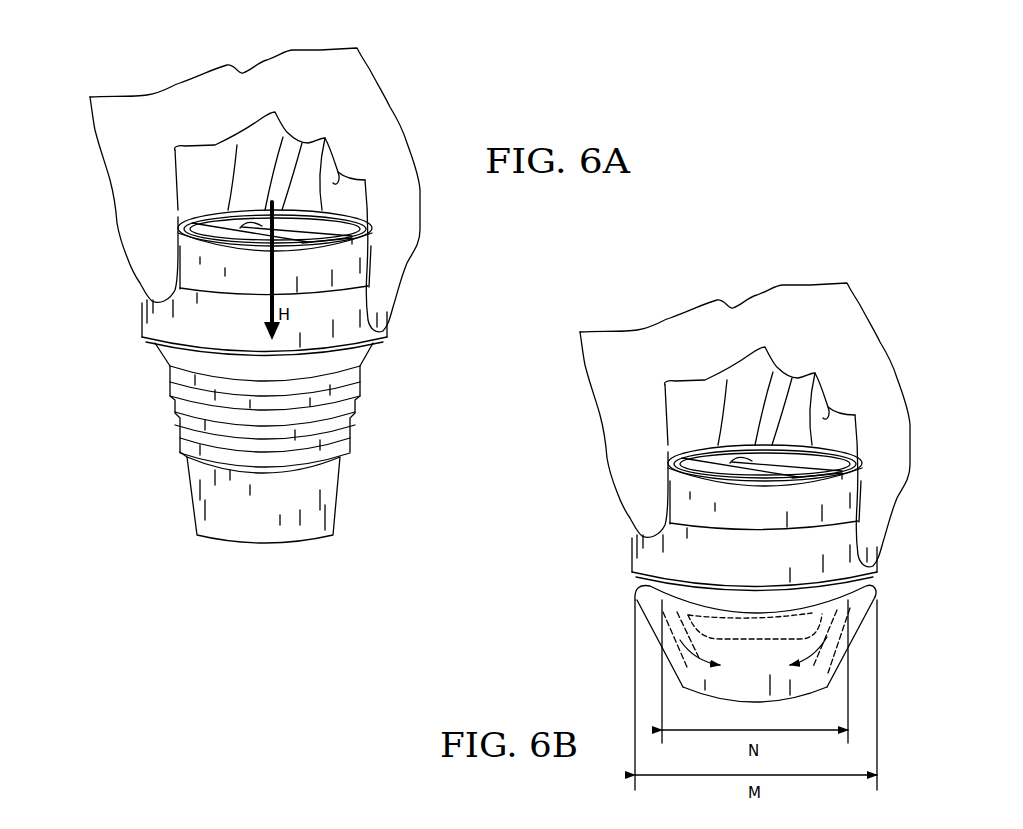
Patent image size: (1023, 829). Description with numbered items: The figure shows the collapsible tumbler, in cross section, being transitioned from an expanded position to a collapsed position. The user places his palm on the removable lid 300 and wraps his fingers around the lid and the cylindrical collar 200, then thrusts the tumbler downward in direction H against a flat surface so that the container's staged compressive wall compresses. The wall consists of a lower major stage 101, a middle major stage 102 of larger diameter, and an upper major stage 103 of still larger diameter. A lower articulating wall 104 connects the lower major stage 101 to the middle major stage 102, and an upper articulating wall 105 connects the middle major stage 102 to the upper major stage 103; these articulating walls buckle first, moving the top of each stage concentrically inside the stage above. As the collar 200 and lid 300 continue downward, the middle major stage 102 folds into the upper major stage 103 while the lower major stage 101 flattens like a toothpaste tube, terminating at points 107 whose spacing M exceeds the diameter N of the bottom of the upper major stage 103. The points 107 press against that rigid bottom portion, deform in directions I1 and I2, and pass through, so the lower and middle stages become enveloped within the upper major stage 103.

In FIG. 6A, the lower major stage 101 is at (322, 495).
In FIG. 6B, the lower major stage 101 is at (830, 652).
In FIG. 6A, the middle major stage 102 is at (327, 410).
In FIG. 6B, the middle major stage 102 is at (655, 628).
In FIG. 6A, the upper major stage 103 is at (350, 356).
In FIG. 6B, the upper major stage 103 is at (837, 571).
In FIG. 6A, the lower articulating wall 104 is at (168, 375).
In FIG. 6A, the upper articulating wall 105 is at (194, 459).
In FIG. 6B, the points 107 is at (635, 595).
In FIG. 6A, the cylindrical collar 200 is at (152, 322).
In FIG. 6B, the cylindrical collar 200 is at (675, 545).
In FIG. 6A, the removable lid 300 is at (200, 270).
In FIG. 6B, the removable lid 300 is at (693, 505).